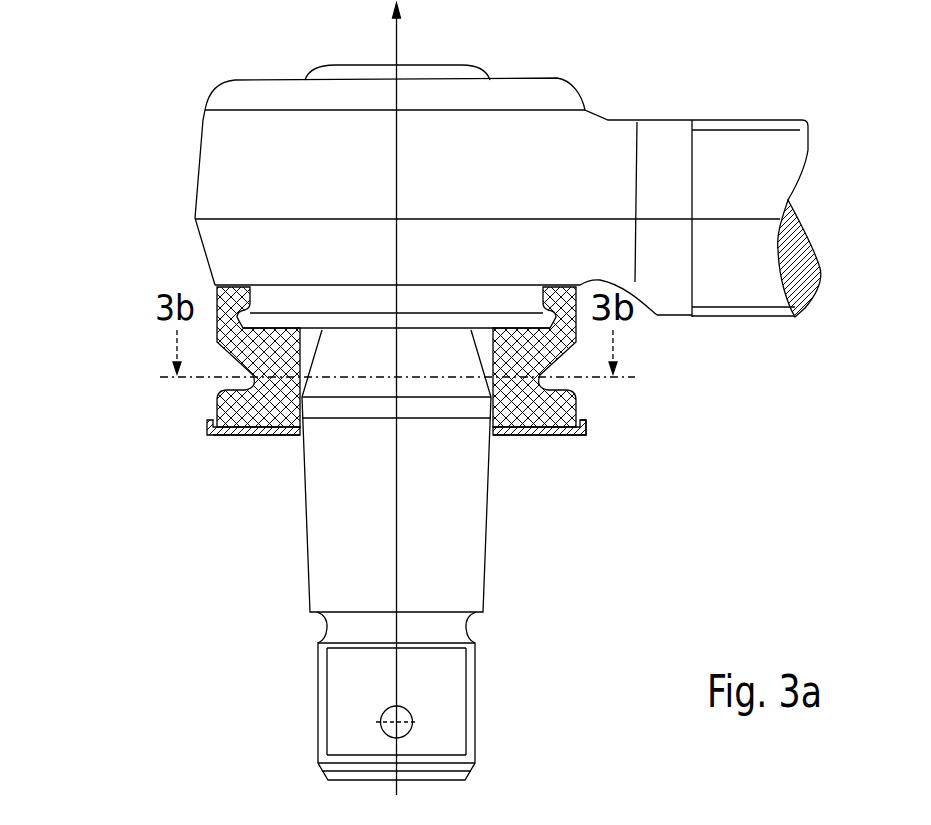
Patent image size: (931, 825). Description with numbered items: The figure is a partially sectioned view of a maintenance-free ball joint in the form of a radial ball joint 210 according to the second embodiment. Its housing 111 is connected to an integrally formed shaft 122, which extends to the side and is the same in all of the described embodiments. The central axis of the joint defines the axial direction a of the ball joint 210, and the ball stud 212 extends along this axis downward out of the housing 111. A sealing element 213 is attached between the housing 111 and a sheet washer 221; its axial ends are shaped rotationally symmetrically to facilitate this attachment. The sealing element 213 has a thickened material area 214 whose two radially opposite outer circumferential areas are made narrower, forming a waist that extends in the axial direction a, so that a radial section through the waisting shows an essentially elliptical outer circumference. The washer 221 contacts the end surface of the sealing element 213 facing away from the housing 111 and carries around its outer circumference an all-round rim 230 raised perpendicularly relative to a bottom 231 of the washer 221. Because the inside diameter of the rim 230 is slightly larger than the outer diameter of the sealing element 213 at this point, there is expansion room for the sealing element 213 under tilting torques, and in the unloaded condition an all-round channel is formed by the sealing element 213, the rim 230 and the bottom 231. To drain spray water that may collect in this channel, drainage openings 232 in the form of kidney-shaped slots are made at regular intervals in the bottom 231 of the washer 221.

The axial direction a is at (396, 42).
The housing 111 is at (190, 148).
The radial ball joint 210 is at (609, 98).
The shaft 122 is at (748, 145).
The ball stud 212 is at (292, 591).
The thickened material area 214 is at (253, 392).
The sealing element 213 is at (200, 414).
The sheet washer 221 is at (238, 452).
The rim 230 is at (604, 425).
The bottom 231 is at (531, 438).
The drainage openings 232 is at (587, 449).